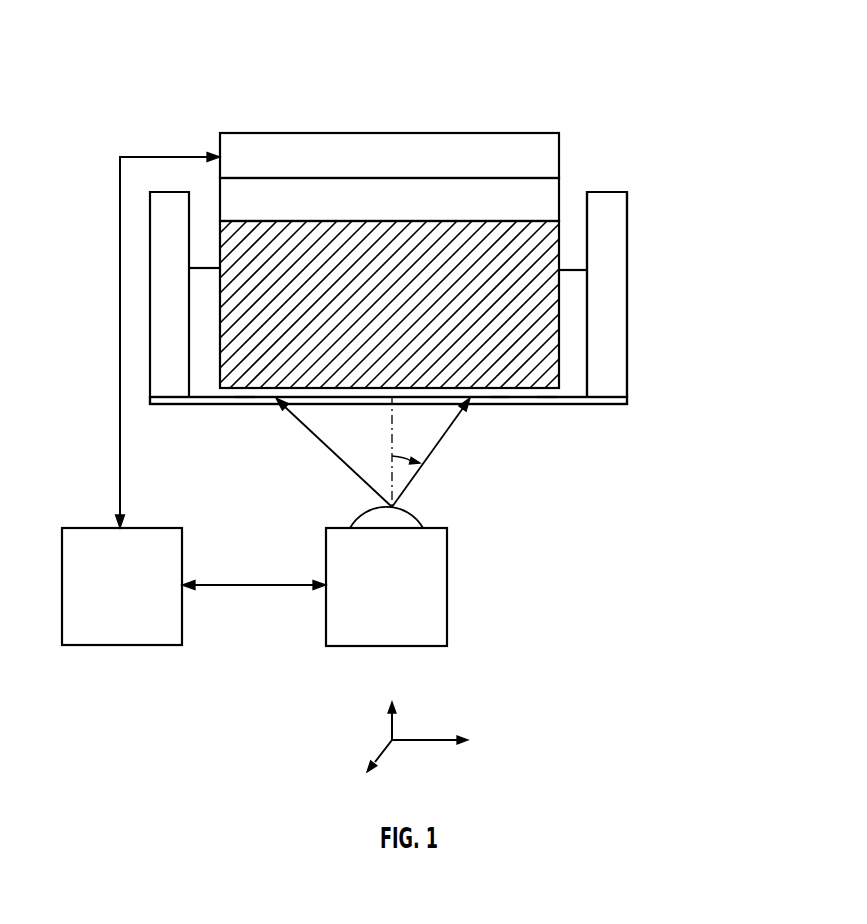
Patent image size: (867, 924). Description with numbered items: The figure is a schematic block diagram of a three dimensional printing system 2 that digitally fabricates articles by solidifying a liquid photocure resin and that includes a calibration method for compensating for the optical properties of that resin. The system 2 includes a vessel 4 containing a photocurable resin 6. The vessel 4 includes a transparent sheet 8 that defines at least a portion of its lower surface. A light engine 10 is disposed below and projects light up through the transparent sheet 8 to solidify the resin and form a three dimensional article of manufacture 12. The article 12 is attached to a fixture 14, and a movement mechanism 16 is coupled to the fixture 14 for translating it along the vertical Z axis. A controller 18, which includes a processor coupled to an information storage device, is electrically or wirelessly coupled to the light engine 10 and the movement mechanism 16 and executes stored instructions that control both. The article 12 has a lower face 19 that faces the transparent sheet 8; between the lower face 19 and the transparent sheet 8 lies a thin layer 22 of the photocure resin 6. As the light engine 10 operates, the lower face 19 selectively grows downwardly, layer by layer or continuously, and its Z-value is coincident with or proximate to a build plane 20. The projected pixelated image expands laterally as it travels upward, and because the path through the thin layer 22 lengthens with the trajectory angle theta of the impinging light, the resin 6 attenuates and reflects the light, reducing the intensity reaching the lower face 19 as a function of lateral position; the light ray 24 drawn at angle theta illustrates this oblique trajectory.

The three dimensional printing system 2 is at (524, 66).
The vessel 4 is at (635, 270).
The photocurable resin 6 is at (578, 352).
The transparent sheet 8 is at (580, 400).
The light engine 10 is at (447, 580).
The three dimensional article of manufacture 12 is at (541, 250).
The fixture 14 is at (545, 204).
The movement mechanism 16 is at (527, 138).
The controller 18 is at (130, 646).
The lower face 19 is at (500, 388).
The build plane 20 is at (547, 390).
The thin layer 22 is at (245, 397).
The light beam 24 is at (450, 430).